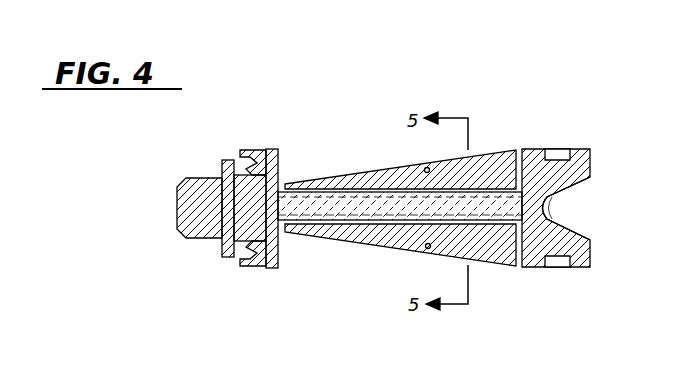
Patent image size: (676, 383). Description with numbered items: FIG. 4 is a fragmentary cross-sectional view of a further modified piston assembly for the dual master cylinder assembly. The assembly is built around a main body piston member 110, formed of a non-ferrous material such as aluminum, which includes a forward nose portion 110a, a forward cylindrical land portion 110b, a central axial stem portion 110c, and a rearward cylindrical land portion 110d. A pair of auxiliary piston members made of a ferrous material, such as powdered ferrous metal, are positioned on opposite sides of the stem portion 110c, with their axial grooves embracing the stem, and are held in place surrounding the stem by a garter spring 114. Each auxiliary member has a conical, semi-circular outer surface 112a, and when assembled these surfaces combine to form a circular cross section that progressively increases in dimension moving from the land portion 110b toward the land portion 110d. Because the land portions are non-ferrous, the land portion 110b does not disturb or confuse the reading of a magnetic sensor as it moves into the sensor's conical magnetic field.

The main body piston member 110 is at (587, 141).
The forward nose portion 110a is at (177, 207).
The forward cylindrical land portion 110b is at (271, 150).
The central axial stem portion 110c is at (318, 203).
The rearward cylindrical land portion 110d is at (531, 268).
The conical, semi-circular outer surface 112a is at (333, 240).
The garter spring 114 is at (428, 248).